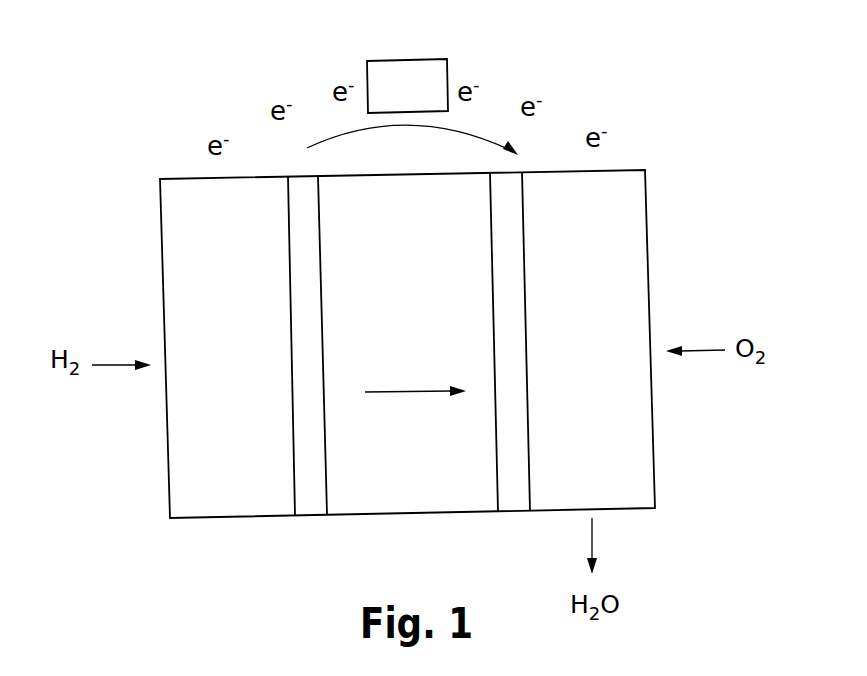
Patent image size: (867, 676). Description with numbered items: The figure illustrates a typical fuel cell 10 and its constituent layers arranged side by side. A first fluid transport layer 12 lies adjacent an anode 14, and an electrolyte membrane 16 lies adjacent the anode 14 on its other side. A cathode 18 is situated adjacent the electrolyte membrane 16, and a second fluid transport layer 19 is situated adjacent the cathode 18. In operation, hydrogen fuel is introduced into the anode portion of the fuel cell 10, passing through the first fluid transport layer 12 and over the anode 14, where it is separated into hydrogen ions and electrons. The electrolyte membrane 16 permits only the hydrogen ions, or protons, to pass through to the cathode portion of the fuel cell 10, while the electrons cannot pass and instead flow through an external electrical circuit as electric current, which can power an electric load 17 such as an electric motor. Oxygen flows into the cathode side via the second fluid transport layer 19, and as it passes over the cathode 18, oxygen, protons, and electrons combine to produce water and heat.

The fuel cell 10 is at (674, 82).
The first fluid transport layer 12 is at (236, 502).
The anode 14 is at (310, 515).
The electrolyte membrane 16 is at (427, 499).
The electric load 17 is at (418, 60).
The cathode 18 is at (513, 510).
The second fluid transport layer 19 is at (607, 495).